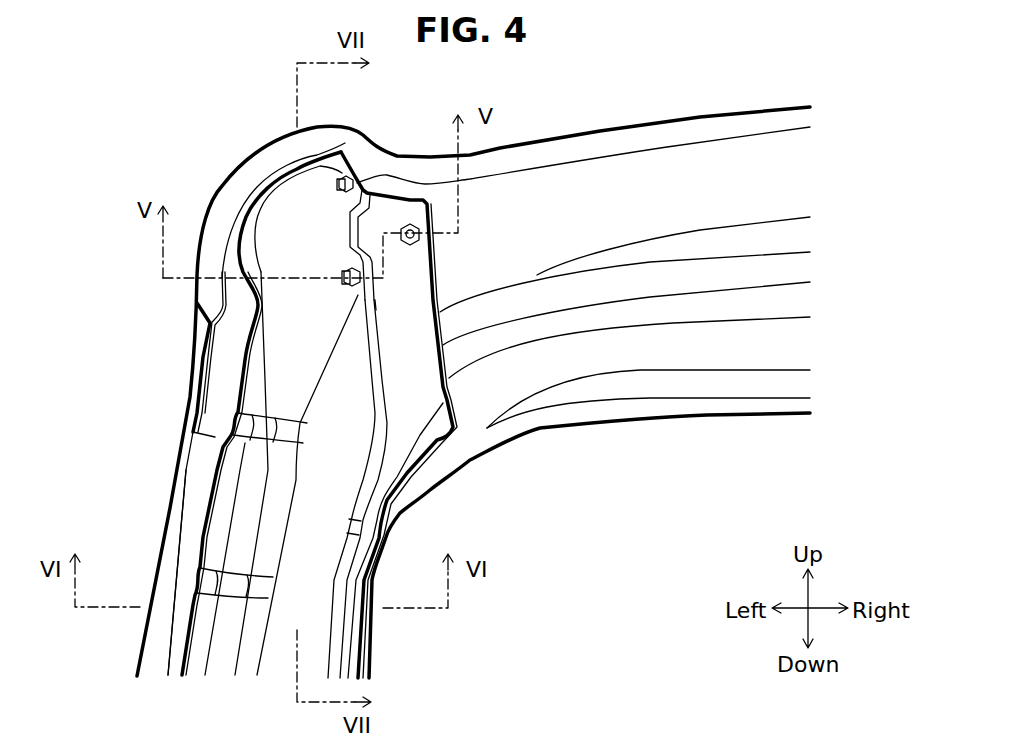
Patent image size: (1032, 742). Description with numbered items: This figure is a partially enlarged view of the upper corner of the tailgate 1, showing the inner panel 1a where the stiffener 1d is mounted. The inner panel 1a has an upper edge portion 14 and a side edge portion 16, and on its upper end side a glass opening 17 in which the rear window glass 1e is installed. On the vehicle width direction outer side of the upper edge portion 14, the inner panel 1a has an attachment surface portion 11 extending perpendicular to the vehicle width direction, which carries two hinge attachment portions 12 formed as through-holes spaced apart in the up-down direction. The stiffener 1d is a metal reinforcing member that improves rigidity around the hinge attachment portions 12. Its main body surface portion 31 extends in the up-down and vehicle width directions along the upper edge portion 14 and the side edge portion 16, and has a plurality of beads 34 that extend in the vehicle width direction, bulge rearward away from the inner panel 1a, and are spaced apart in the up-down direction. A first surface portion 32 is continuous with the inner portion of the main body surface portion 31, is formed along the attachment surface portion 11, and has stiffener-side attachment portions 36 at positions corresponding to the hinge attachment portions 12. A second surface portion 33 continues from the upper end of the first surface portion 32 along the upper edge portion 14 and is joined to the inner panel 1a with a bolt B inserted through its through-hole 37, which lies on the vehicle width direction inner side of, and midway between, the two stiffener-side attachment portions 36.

The tailgate 1 is at (444, 362).
The inner panel 1a is at (583, 133).
The stiffener 1d is at (243, 293).
The rear window glass 1e is at (640, 611).
The attachment surface portion 11 is at (367, 320).
The hinge attachment portion 12 is at (348, 231).
The upper edge portion 14 is at (743, 163).
The side edge portion 16 is at (157, 637).
The glass opening 17 is at (667, 417).
The main body surface portion 31 is at (320, 379).
The first surface portion 32 is at (454, 408).
The second surface portion 33 is at (408, 280).
The bead 34 is at (243, 420).
The stiffener-side attachment portion 36 is at (381, 188).
The through-hole 37 is at (418, 242).
The bolt B is at (344, 270).